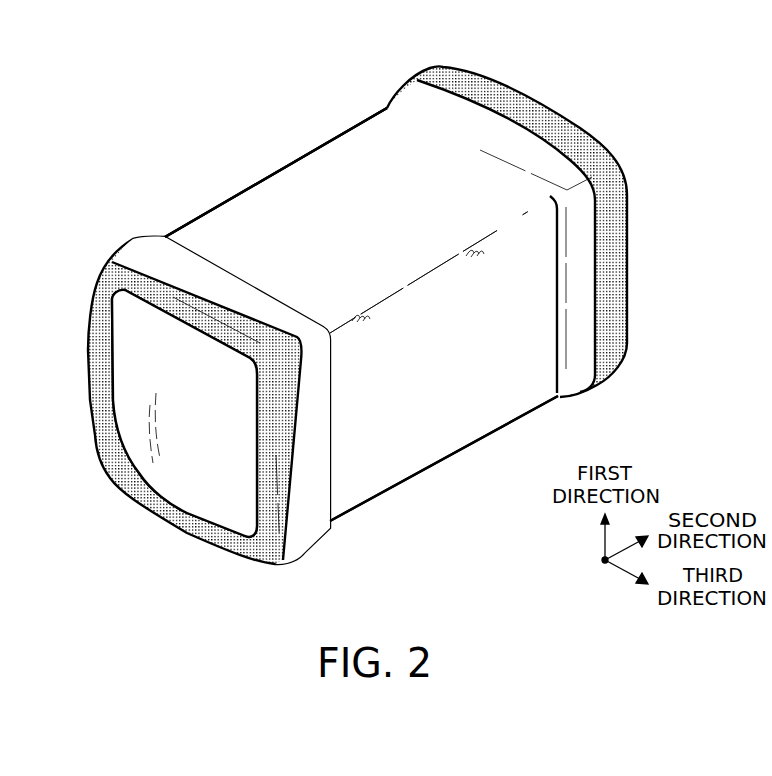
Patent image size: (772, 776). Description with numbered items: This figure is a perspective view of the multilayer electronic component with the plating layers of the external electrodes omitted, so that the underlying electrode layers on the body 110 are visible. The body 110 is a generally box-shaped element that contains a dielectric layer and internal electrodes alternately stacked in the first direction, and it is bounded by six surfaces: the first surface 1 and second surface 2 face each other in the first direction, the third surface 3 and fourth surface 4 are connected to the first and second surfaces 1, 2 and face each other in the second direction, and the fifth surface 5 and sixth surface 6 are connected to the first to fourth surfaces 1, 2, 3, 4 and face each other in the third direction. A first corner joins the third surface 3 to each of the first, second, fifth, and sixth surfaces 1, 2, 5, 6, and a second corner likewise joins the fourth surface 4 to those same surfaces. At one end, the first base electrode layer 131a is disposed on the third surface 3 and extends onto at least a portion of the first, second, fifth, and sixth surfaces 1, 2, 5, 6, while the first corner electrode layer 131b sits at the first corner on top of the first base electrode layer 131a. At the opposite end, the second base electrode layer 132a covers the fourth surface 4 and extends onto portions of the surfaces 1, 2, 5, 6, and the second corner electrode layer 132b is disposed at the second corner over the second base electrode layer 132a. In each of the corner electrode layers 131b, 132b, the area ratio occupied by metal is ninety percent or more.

The first surface 1 is at (413, 447).
The second surface 2 is at (365, 182).
The third surface 3 is at (172, 366).
The fourth surface 4 is at (522, 205).
The fifth surface 5 is at (318, 173).
The sixth surface 6 is at (440, 385).
The body 110 is at (227, 222).
The first base electrode layer 131a is at (152, 242).
The first corner electrode layer 131b is at (95, 295).
The second base electrode layer 132a is at (417, 87).
The second corner electrode layer 132b is at (458, 78).